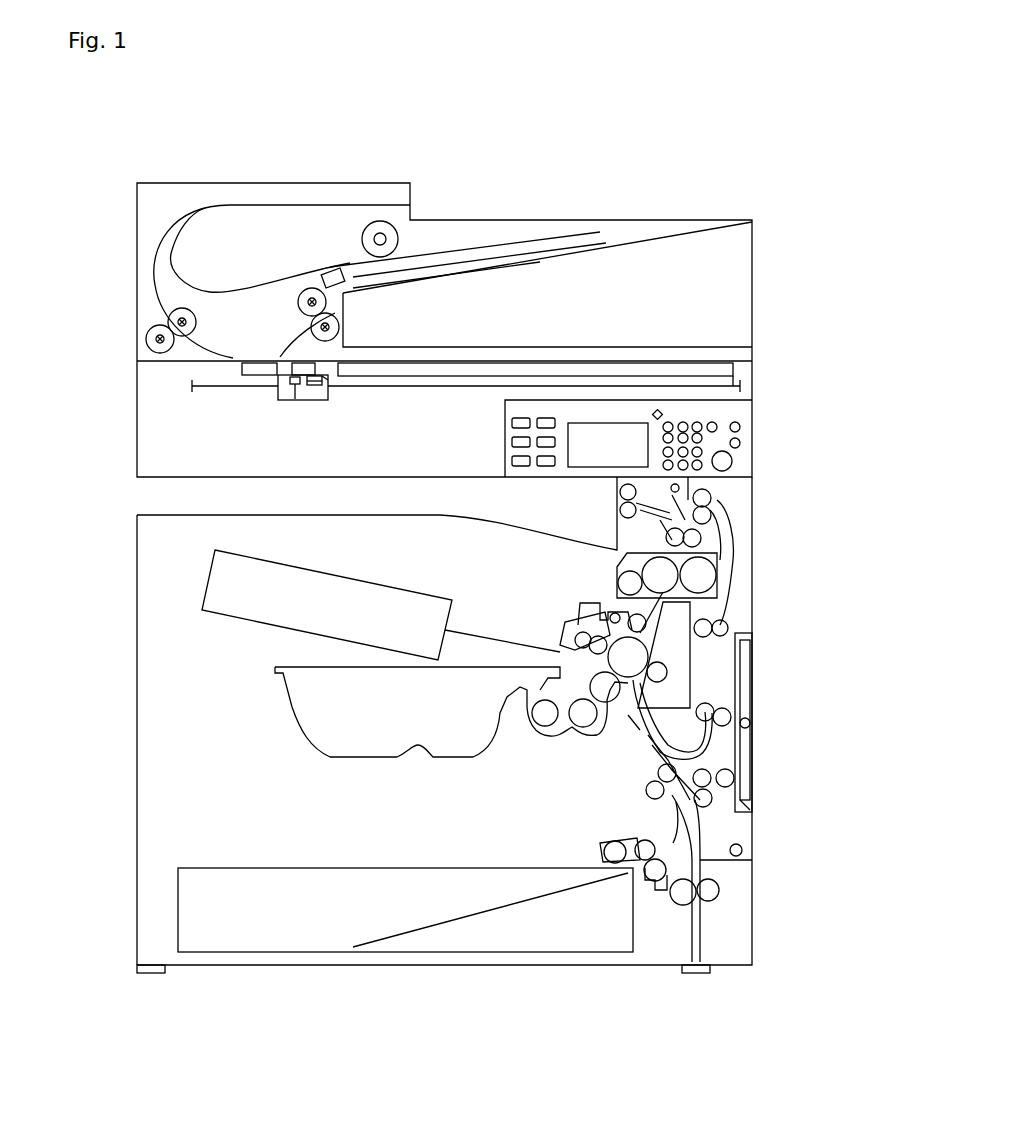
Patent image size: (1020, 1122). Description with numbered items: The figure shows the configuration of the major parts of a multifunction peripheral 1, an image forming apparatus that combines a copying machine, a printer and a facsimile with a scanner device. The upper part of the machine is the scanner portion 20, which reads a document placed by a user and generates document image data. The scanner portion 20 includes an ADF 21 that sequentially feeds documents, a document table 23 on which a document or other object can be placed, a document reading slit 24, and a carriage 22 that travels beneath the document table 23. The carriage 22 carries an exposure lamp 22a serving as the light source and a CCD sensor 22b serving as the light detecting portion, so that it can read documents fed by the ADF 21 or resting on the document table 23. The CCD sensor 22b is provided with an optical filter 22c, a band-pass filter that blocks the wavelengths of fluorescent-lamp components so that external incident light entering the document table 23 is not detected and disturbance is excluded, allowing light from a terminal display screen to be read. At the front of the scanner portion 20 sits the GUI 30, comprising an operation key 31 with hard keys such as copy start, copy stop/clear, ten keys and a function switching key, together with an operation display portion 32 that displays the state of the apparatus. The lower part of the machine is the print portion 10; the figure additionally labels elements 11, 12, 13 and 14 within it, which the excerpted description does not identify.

The multifunction peripheral 1 is at (652, 137).
The print portion 10 is at (136, 655).
The paper feed cassette 11 is at (207, 862).
The exposure unit 12 is at (527, 626).
The image forming section 13 is at (614, 568).
The discharge tray 14 is at (497, 517).
The scanner portion 20 is at (136, 408).
The ADF 21 is at (343, 182).
The carriage 22 is at (278, 395).
The exposure lamp 22a is at (295, 401).
The CCD sensor 22b is at (318, 401).
The optical filter 22c is at (328, 400).
The document table 23 is at (755, 372).
The document reading slit 24 is at (240, 366).
The GUI 30 is at (752, 462).
The operation key 31 is at (660, 469).
The operation display portion 32 is at (585, 458).